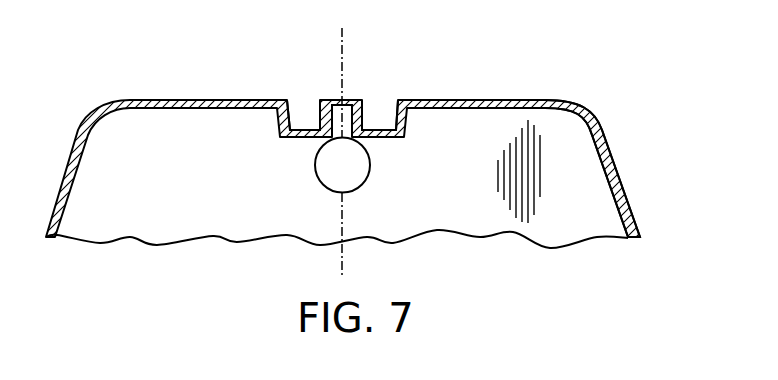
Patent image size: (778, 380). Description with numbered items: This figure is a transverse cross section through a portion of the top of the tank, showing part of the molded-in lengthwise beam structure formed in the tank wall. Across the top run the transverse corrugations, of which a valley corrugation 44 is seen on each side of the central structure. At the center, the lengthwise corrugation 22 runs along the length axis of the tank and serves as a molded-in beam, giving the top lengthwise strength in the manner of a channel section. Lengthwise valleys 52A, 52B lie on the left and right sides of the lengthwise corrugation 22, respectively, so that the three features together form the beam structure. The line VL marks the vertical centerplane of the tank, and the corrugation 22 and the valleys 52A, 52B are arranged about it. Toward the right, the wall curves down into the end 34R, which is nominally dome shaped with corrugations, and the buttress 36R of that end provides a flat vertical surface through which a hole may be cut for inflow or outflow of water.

The valley corrugation 44 is at (178, 100).
The lengthwise valley 52A is at (303, 116).
The lengthwise valley 52B is at (380, 116).
The lengthwise corrugation 22 is at (329, 98).
The vertical centerplane line VL is at (344, 45).
The buttress 36R is at (371, 165).
The end 34R is at (597, 163).